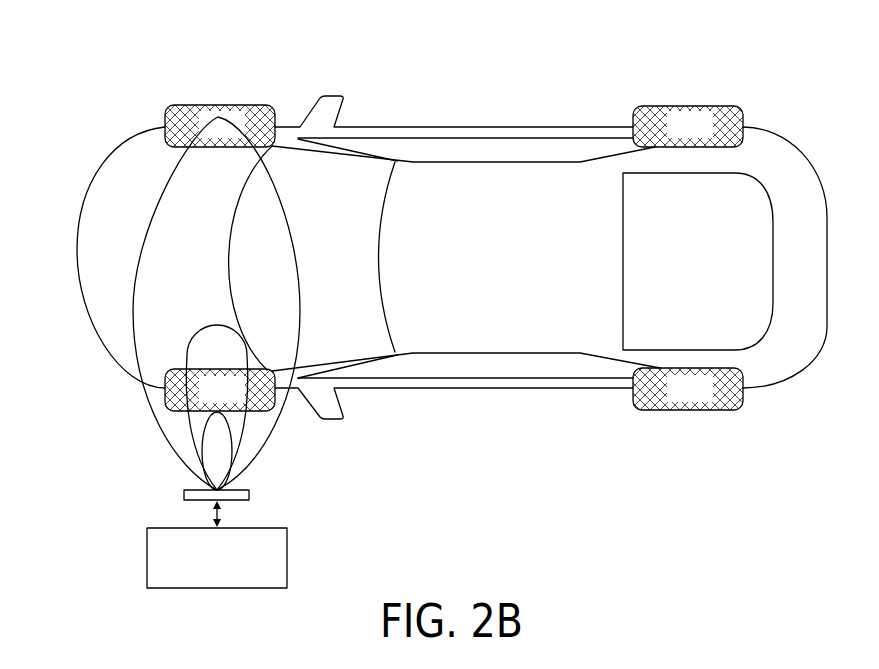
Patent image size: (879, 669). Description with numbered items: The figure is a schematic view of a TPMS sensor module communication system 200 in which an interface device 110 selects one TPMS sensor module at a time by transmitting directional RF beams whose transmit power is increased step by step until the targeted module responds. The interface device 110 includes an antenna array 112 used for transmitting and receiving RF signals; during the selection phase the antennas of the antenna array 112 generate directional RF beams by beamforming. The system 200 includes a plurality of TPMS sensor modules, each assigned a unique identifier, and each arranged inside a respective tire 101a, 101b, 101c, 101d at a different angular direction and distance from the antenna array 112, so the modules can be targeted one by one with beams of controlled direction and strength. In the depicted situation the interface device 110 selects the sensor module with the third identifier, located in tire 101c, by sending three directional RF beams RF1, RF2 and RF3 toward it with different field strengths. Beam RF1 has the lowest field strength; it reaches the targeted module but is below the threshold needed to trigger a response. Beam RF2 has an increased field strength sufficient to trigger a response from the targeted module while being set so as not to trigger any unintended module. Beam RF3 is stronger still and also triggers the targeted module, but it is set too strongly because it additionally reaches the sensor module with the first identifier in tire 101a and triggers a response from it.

The TPMS sensor module communication system 200 is at (115, 49).
The tire 101a is at (218, 105).
The tire 101b is at (687, 106).
The tire 101c is at (250, 411).
The tire 101d is at (687, 410).
The interface device 110 is at (287, 558).
The antenna array 112 is at (250, 495).
The directional RF beam RF1 is at (202, 451).
The directional RF beam RF2 is at (185, 422).
The directional RF beam RF3 is at (167, 163).